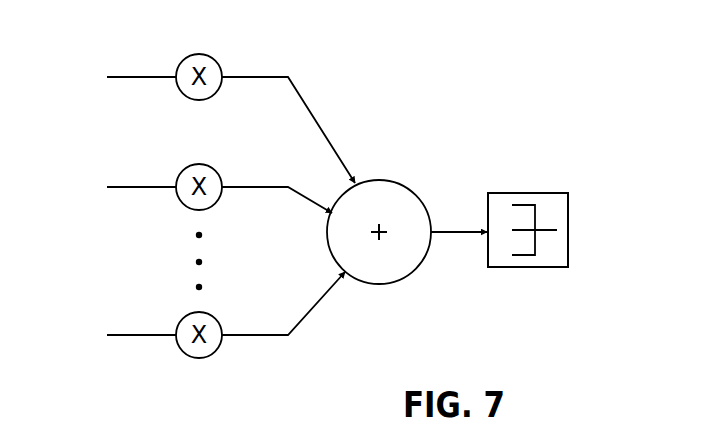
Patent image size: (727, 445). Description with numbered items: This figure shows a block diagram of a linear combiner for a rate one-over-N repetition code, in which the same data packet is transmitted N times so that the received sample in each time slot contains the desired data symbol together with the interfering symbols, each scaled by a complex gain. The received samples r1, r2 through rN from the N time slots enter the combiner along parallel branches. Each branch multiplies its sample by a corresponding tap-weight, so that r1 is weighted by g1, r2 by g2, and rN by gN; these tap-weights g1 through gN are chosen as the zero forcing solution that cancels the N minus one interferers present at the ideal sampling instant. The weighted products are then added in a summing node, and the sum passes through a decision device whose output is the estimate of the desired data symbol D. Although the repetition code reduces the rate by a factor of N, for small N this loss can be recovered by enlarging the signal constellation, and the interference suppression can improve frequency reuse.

The received sample r1 is at (93, 71).
The received sample r2 is at (93, 181).
The received sample rN is at (94, 329).
The tap-weight g1 is at (199, 53).
The tap-weight g2 is at (199, 163).
The tap-weight gN is at (199, 359).
The desired data symbol D is at (568, 230).